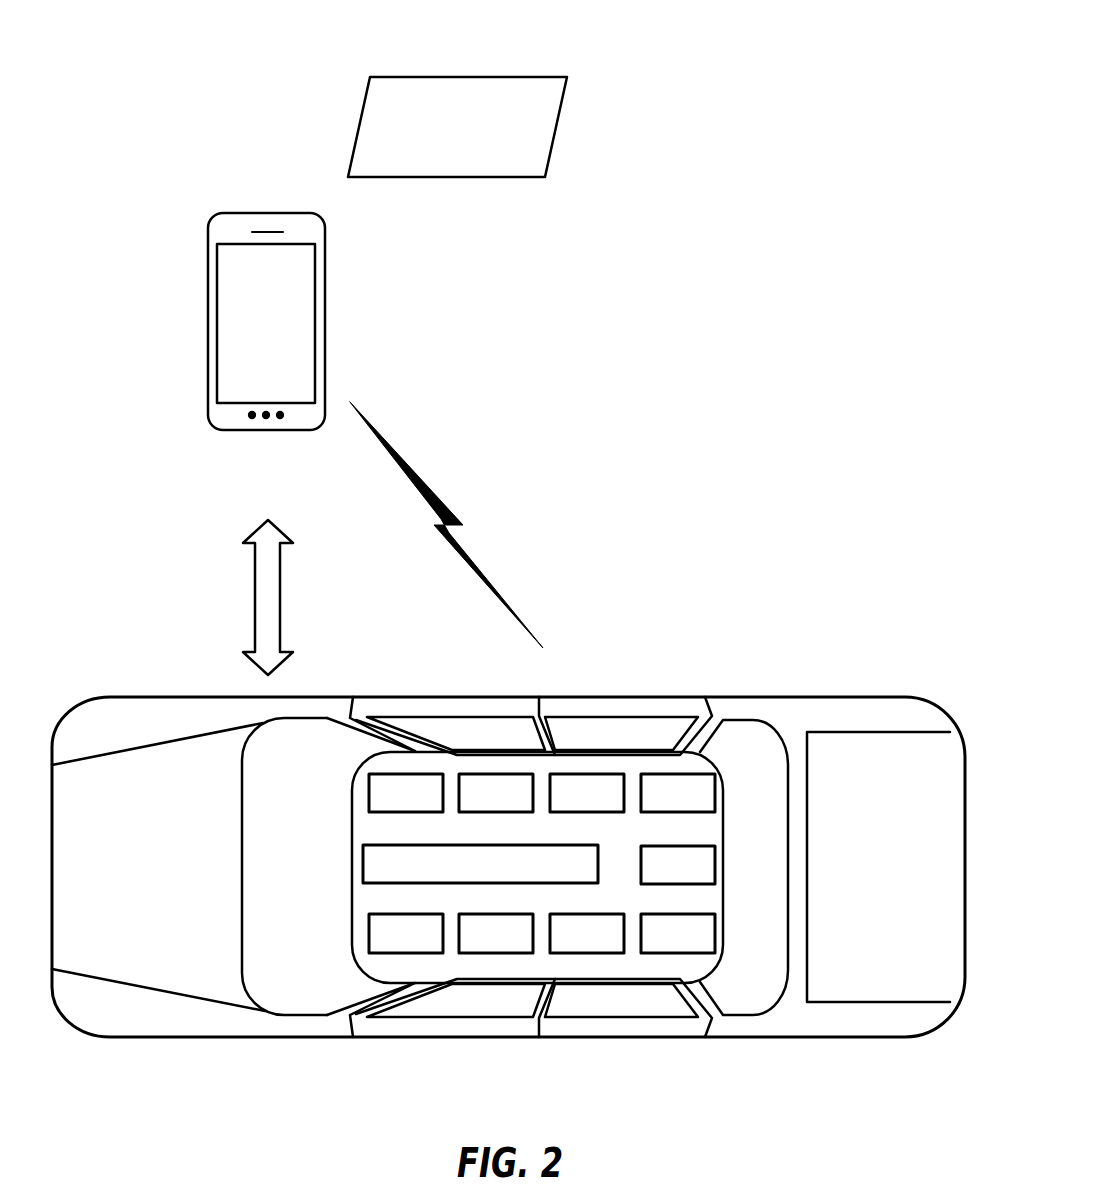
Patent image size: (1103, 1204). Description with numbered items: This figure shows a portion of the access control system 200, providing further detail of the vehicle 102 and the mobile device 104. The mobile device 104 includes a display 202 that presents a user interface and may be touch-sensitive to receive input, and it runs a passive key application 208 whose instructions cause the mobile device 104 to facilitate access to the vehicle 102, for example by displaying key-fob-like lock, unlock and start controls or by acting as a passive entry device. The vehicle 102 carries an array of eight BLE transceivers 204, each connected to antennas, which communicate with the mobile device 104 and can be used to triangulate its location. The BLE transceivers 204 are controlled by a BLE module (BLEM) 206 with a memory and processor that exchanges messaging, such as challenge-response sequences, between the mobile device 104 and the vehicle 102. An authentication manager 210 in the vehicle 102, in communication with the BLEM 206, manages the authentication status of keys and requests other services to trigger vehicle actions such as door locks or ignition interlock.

The passive key authentication system 200 is at (214, 37).
The vehicle 102 is at (508, 898).
The mobile device 104 is at (227, 356).
The display 202 is at (220, 310).
The BLE transceivers 204 is at (737, 777).
The BLE module (BLEM) 206 is at (715, 864).
The passive key application 208 is at (325, 272).
The authentication manager 210 is at (600, 864).